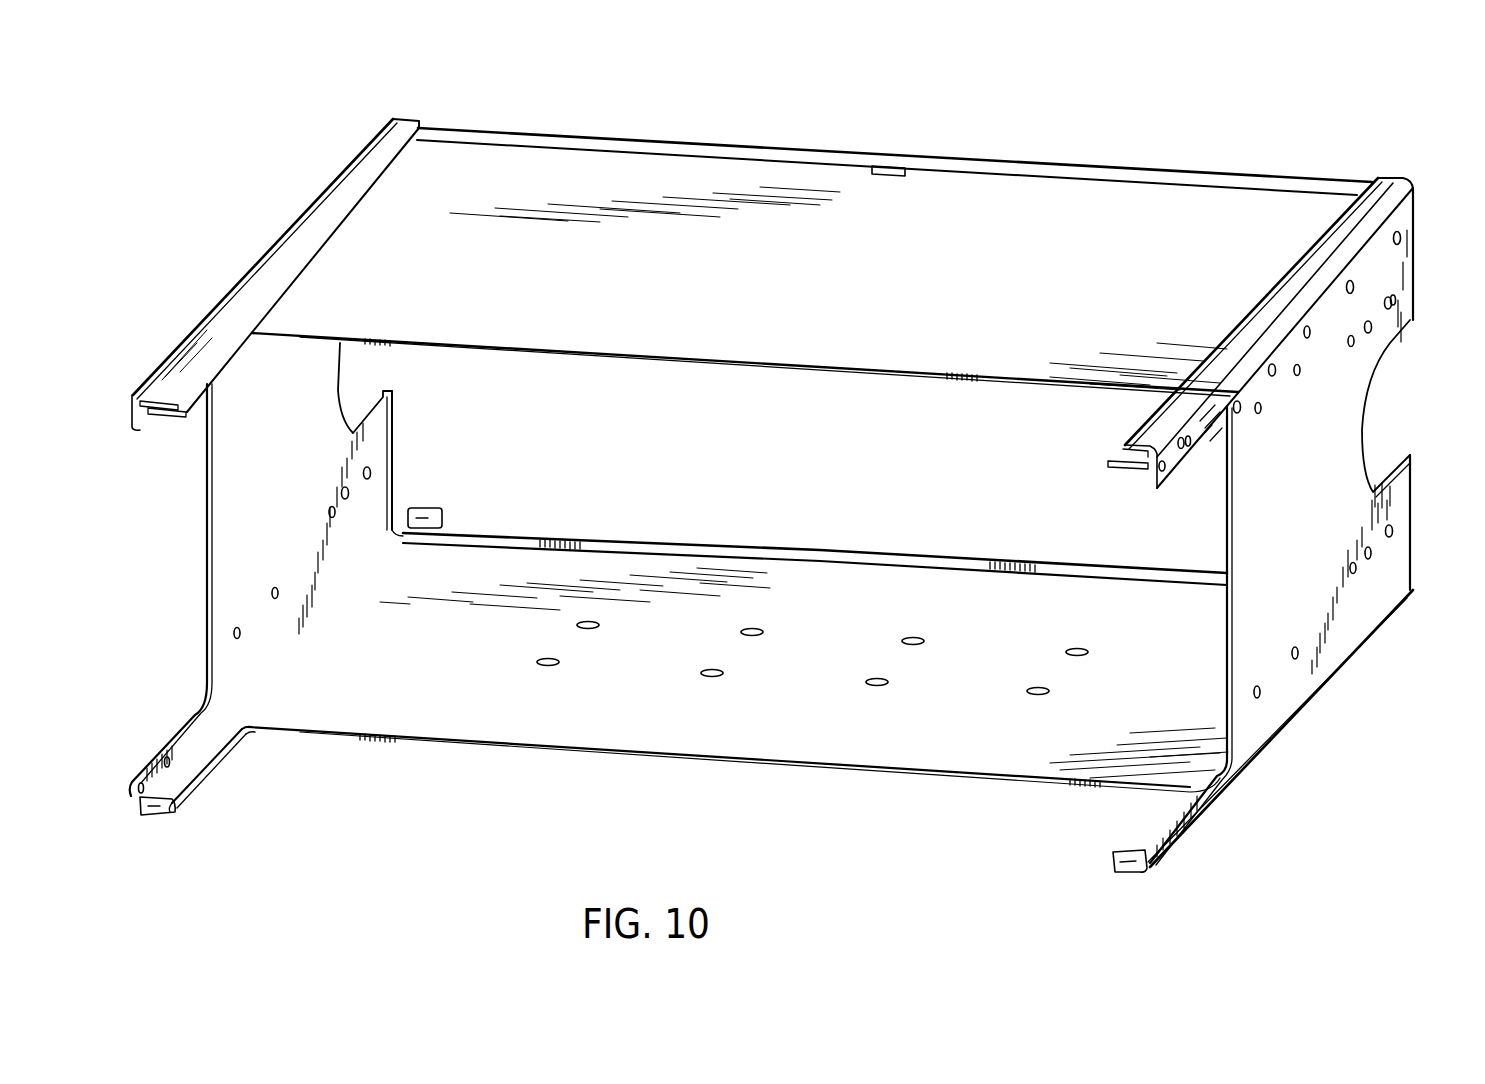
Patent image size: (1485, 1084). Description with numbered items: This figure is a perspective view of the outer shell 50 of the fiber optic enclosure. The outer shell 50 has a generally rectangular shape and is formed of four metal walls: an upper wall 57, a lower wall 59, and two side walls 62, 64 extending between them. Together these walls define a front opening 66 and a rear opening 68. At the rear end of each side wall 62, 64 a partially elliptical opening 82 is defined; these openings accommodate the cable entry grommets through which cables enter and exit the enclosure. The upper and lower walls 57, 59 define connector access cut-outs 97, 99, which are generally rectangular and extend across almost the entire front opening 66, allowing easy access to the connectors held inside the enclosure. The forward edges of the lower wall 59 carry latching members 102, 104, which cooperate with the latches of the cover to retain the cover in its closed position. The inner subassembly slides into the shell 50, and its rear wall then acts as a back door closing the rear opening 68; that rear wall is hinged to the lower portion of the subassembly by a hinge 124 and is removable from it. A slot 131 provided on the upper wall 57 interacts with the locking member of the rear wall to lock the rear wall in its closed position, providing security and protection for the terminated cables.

The outer shell 50 is at (790, 512).
The upper wall 57 is at (1020, 228).
The lower wall 59 is at (993, 742).
The side wall 62 is at (235, 482).
The side wall 64 is at (1317, 428).
The front opening 66 is at (581, 752).
The rear opening 68 is at (733, 550).
The partially elliptical opening 82 is at (373, 397).
The connector access cut-out 97 is at (243, 340).
The connector access cut-out 99 is at (213, 760).
The latching member 102 is at (153, 815).
The latching member 104 is at (1122, 870).
The hinge 124 is at (430, 513).
The slot 131 is at (893, 168).